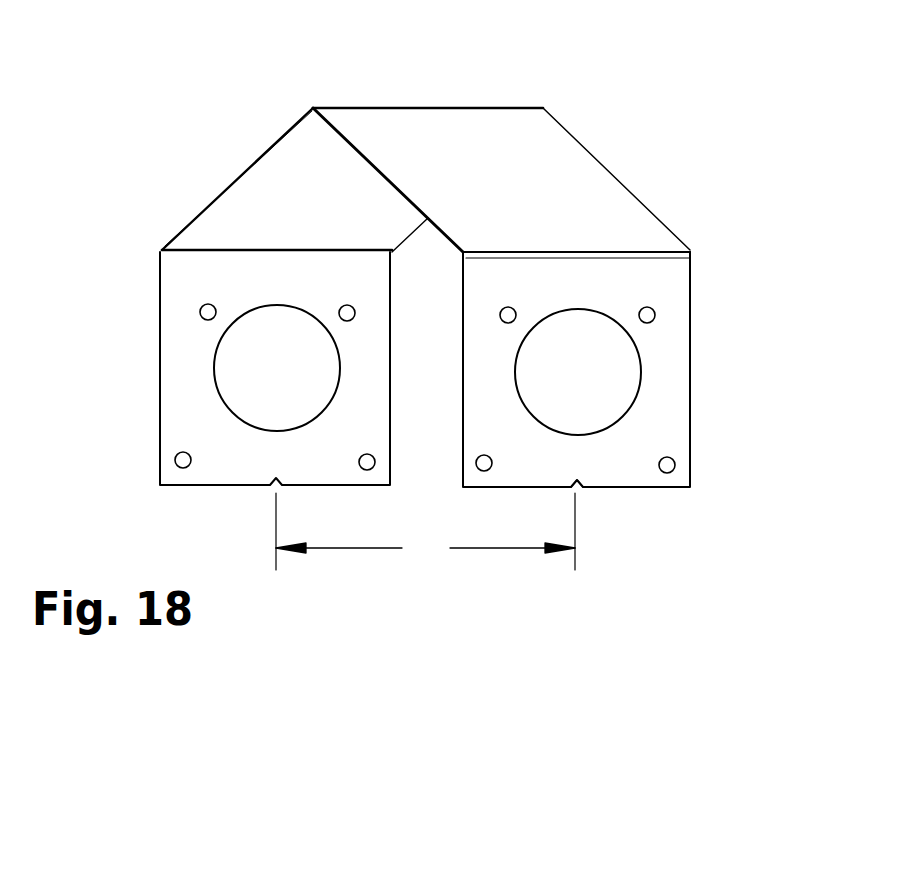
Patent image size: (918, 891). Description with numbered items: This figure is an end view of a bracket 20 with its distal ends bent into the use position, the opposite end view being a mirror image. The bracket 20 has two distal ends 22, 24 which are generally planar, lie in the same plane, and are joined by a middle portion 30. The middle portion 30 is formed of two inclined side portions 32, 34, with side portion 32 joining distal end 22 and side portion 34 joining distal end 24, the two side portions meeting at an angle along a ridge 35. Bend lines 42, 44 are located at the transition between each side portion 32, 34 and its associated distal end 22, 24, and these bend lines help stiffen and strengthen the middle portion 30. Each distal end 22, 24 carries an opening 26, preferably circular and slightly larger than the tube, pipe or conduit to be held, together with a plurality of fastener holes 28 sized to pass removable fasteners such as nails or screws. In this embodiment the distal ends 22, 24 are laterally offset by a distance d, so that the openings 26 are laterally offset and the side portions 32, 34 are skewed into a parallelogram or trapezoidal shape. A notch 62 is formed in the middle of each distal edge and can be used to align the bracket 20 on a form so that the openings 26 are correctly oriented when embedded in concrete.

The bracket 20 is at (452, 88).
The distal end 22 is at (670, 380).
The distal end 24 is at (187, 393).
The opening 26 is at (262, 402).
The fastener hole 28 is at (199, 305).
The middle portion 30 is at (378, 153).
The side portion 32 is at (553, 185).
The side portion 34 is at (290, 200).
The ridge 35 is at (475, 107).
The bend line 42 is at (622, 250).
The bend line 44 is at (220, 250).
The notch 62 is at (577, 487).